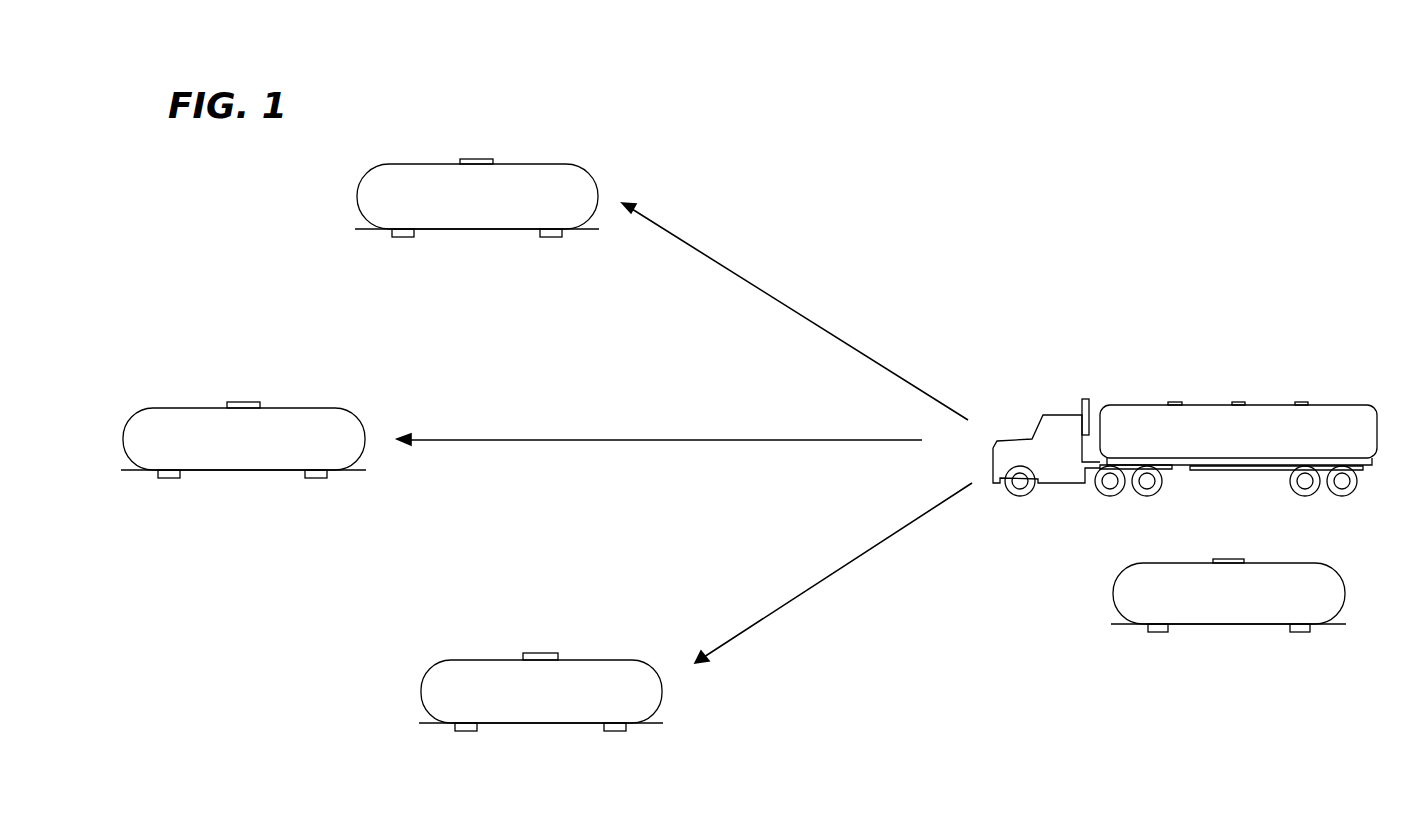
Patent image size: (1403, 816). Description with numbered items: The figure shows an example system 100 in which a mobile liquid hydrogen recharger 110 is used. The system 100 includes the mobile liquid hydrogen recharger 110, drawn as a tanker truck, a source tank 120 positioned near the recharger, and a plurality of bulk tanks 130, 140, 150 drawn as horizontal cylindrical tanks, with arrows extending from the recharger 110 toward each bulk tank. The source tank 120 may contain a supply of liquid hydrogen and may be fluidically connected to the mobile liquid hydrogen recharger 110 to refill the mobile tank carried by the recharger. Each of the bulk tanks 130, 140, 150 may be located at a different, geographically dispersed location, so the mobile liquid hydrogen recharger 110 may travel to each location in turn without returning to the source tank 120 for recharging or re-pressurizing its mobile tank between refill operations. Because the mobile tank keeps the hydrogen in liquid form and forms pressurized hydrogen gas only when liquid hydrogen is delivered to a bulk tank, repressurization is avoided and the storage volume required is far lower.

The system 100 is at (1303, 146).
The mobile liquid hydrogen recharger 110 is at (1348, 405).
The source tank 120 is at (1327, 563).
The bulk tank 130 is at (555, 164).
The bulk tank 140 is at (337, 408).
The bulk tank 150 is at (633, 660).